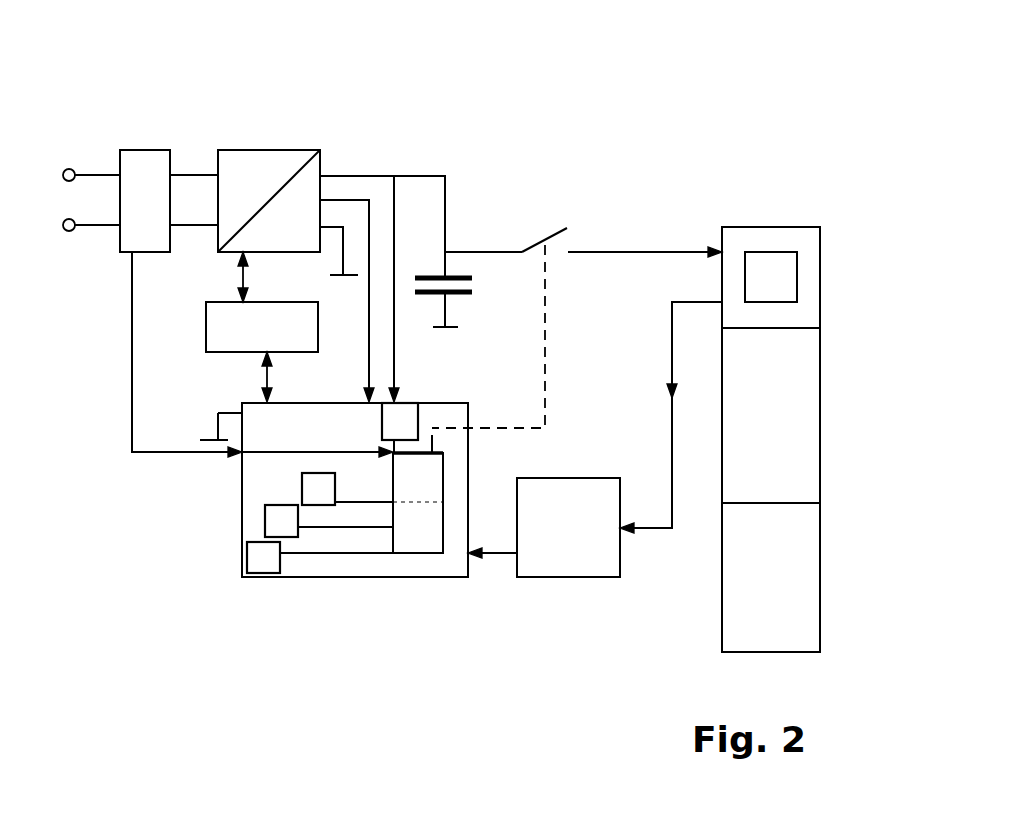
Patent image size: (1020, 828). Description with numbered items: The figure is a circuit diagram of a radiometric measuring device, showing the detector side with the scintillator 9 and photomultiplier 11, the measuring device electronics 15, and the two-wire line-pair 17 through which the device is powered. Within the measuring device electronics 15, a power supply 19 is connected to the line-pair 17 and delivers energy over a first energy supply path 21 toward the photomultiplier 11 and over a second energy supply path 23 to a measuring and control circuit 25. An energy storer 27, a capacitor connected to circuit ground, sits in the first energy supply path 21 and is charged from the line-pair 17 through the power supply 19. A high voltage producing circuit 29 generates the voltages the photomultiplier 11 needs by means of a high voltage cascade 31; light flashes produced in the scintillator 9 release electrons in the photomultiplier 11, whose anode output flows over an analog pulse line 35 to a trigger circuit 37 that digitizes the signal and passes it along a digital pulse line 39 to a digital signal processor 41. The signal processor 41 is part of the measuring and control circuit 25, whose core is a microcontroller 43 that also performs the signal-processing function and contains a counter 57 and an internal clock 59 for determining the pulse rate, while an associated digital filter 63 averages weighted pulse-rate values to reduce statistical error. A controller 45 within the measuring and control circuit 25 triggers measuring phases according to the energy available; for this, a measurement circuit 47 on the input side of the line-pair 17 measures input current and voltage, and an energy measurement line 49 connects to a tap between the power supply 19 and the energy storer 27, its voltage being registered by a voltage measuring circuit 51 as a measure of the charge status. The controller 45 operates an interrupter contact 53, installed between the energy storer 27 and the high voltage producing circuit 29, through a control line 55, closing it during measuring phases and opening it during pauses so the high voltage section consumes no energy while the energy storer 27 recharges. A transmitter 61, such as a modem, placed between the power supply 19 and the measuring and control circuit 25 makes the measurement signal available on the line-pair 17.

The scintillator 9 is at (822, 590).
The photomultiplier 11 is at (820, 380).
The measuring device electronics 15 is at (246, 104).
The line-pair 17 is at (58, 162).
The power supply 19 is at (320, 150).
The first energy supply path 21 is at (420, 176).
The second energy supply path 23 is at (364, 355).
The measuring and control circuit 25 is at (345, 577).
The energy storer 27 is at (470, 276).
The high voltage producing circuit 29 is at (820, 227).
The high voltage cascade 31 is at (771, 277).
The analog pulse line 35 is at (672, 455).
The trigger circuit 37 is at (568, 577).
The digital pulse line 39 is at (492, 556).
The digital signal processor 41 is at (418, 532).
The microcontroller 43 is at (413, 553).
The controller 45 is at (418, 482).
The measurement circuit 47 is at (148, 150).
The energy measurement line 49 is at (397, 370).
The voltage measuring circuit 51 is at (400, 428).
The interrupter contact 53 is at (555, 232).
The control line 55 is at (545, 357).
The counter 57 is at (329, 521).
The internal clock 59 is at (320, 557).
The transmitter 61 is at (262, 327).
The digital filter 63 is at (347, 489).